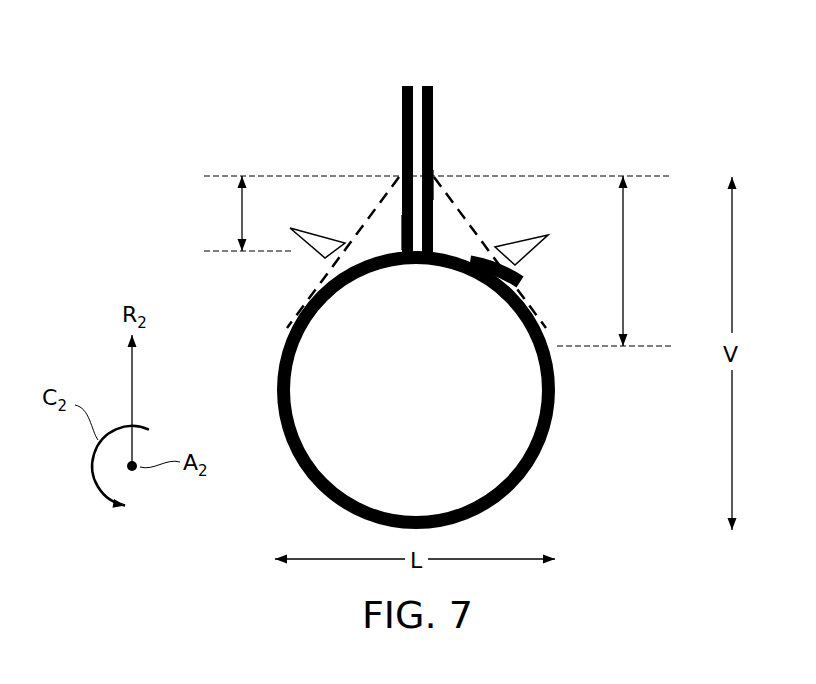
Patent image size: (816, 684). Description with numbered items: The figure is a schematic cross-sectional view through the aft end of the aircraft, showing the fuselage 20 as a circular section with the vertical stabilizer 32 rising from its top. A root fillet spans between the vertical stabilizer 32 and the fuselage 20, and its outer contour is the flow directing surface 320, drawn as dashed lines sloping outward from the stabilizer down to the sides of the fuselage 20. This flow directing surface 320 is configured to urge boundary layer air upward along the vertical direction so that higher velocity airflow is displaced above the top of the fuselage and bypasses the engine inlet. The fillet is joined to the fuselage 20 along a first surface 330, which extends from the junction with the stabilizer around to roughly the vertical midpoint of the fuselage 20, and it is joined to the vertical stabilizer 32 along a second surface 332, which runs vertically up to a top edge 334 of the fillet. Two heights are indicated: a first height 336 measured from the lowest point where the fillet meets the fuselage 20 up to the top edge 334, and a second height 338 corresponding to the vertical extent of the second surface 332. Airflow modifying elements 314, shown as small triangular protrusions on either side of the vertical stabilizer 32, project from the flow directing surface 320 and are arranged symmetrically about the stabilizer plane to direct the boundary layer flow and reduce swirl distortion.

The fuselage 20 is at (532, 470).
The vertical stabilizer 32 is at (417, 100).
The flow directing surface 320 is at (370, 187).
The top edge 334 is at (440, 167).
The second surface 332 is at (393, 230).
The first surface 330 is at (481, 294).
The airflow modifying elements 314 is at (312, 240).
The second height 338 is at (240, 213).
The first height 336 is at (625, 262).